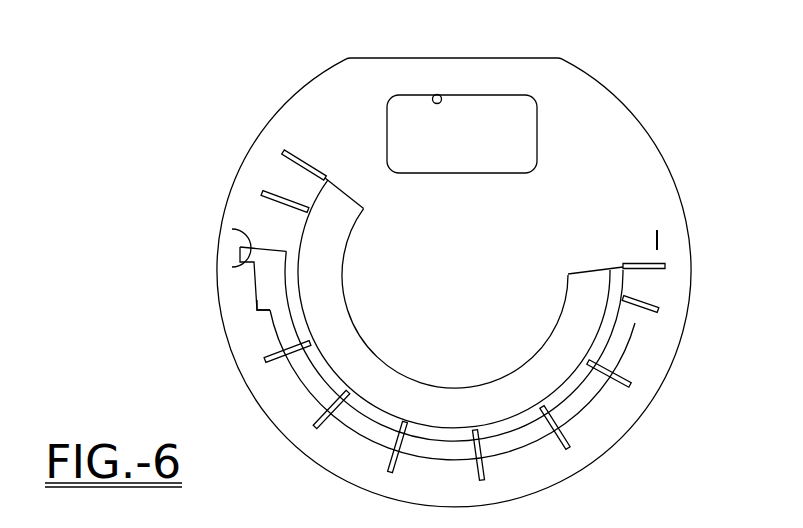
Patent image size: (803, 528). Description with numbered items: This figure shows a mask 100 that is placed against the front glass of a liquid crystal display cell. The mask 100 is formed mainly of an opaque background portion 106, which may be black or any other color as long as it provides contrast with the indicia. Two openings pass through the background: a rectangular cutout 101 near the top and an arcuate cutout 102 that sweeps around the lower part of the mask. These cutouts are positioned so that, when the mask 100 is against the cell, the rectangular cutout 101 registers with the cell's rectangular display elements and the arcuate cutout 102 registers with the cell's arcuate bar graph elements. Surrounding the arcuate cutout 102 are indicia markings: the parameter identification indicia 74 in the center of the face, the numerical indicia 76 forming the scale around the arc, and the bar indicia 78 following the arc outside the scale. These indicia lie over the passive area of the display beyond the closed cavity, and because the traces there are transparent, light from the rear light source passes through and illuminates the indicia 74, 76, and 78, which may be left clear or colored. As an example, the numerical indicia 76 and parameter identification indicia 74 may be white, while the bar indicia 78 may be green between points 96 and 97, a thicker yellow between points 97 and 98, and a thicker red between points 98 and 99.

The parameter identification indicia 74 is at (402, 255).
The numerical indicia 76 is at (662, 217).
The bar indicia 78 is at (539, 454).
The point 96 is at (635, 323).
The point 97 is at (256, 312).
The point 98 is at (242, 262).
The point 99 is at (230, 228).
The mask 100 is at (272, 106).
The rectangular cutout 101 is at (437, 94).
The arcuate cutout 102 is at (612, 283).
The opaque background portion 106 is at (636, 148).